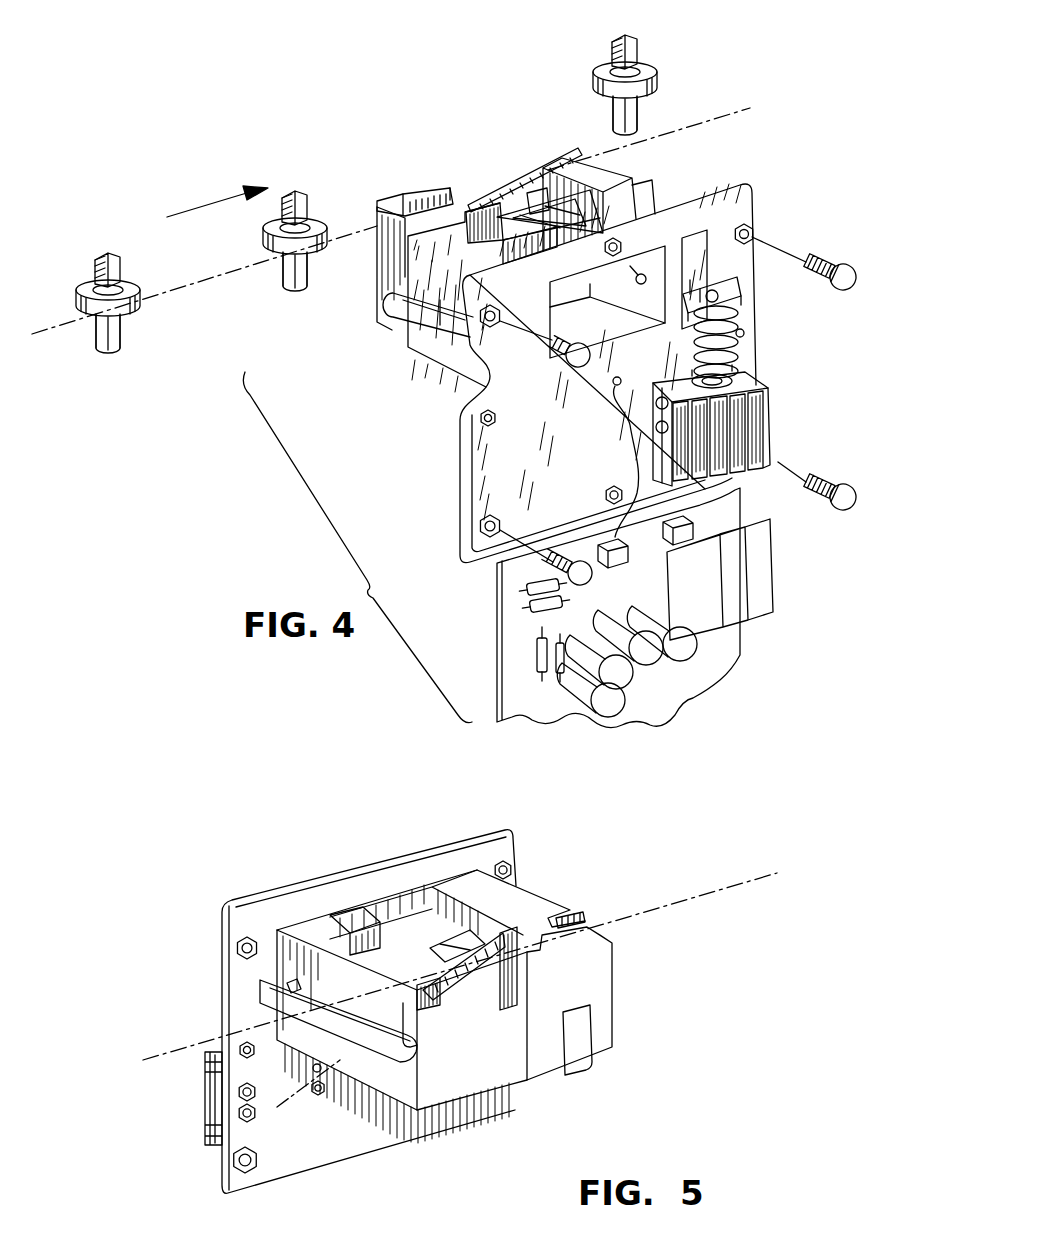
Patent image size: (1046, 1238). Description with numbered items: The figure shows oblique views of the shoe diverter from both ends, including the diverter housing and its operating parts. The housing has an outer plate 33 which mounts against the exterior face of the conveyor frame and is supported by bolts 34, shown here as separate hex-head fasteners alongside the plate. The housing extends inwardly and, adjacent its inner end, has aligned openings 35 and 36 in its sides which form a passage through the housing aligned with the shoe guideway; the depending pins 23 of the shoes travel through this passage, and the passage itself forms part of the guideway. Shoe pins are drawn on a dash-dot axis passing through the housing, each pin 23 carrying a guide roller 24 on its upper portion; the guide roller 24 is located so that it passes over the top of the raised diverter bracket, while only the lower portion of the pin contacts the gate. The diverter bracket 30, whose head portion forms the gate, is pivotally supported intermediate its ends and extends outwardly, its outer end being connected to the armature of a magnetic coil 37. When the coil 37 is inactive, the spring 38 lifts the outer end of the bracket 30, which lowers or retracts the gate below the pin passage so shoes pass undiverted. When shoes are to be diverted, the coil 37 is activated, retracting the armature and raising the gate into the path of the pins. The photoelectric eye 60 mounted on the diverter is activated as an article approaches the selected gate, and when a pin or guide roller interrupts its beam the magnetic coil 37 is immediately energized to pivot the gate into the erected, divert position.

In FIG. 4, the depending pins 23 is at (105, 346).
In FIG. 4, the guide roller 24 is at (78, 297).
In FIG. 4, the diverter bracket 30 is at (502, 182).
In FIG. 5, the diverter bracket 30 is at (462, 978).
In FIG. 4, the outer plate 33 is at (765, 208).
In FIG. 5, the outer plate 33 is at (218, 935).
In FIG. 4, the bolts 34 is at (853, 267).
In FIG. 4, the aligned opening 35 is at (440, 197).
In FIG. 5, the aligned opening 35 is at (582, 922).
In FIG. 4, the aligned opening 36 is at (587, 160).
In FIG. 5, the aligned opening 36 is at (390, 978).
In FIG. 4, the magnetic coil 37 is at (747, 377).
In FIG. 4, the spring 38 is at (740, 352).
In FIG. 4, the photoelectric eye 60 is at (377, 263).
In FIG. 5, the photoelectric eye 60 is at (613, 963).